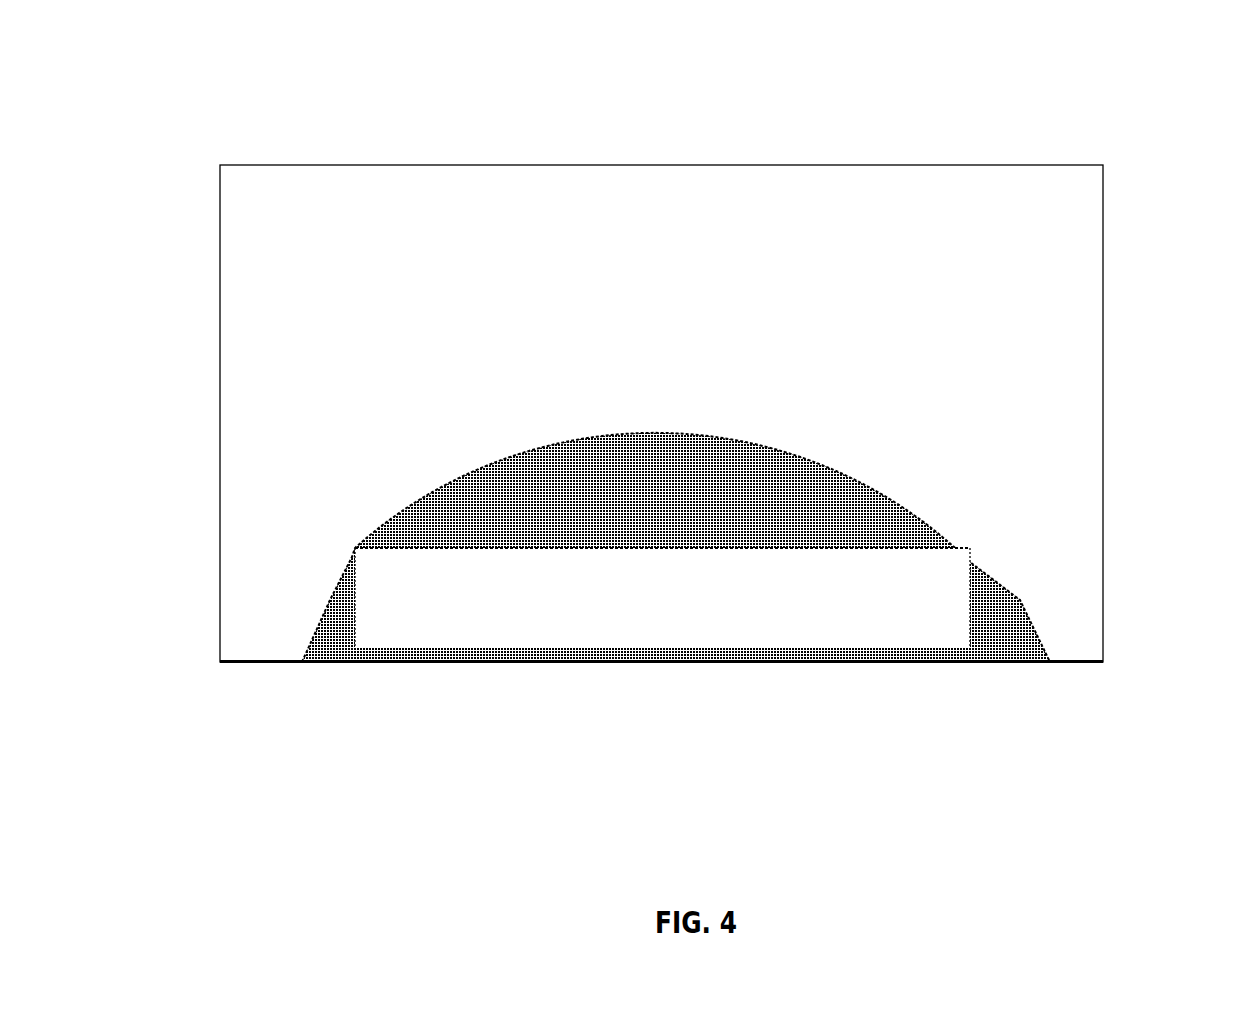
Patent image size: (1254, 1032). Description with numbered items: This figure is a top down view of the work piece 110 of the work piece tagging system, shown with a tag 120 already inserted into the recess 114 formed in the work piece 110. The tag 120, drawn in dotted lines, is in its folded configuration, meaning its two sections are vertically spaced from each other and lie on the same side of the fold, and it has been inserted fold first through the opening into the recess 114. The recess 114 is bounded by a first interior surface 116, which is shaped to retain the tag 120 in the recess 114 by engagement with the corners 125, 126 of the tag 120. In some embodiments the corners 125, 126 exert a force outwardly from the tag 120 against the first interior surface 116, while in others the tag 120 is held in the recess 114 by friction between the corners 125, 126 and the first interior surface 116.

The work piece 110 is at (662, 165).
The recess 114 is at (735, 501).
The first interior surface 116 is at (667, 433).
The tag 120 is at (720, 608).
The corner 125 is at (353, 550).
The corner 126 is at (970, 548).